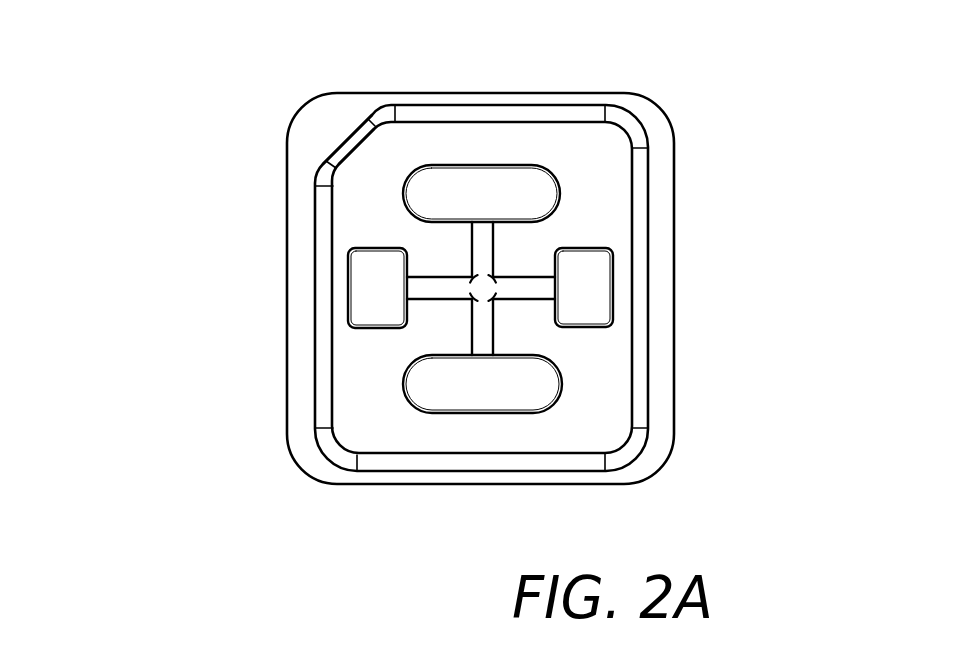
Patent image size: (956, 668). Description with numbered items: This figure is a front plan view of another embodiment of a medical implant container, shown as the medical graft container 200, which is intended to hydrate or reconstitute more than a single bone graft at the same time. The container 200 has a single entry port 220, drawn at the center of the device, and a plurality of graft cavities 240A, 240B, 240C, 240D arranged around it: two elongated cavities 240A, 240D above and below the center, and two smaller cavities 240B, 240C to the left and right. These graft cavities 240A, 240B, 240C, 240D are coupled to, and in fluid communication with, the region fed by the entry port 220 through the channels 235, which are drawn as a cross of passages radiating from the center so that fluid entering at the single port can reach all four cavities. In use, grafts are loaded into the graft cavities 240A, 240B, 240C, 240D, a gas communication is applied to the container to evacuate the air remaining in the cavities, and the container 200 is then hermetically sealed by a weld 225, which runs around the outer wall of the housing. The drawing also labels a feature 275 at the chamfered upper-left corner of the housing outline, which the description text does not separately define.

The medical graft container 200 is at (193, 120).
The weld 225 is at (640, 313).
The chamfered corner 275 is at (325, 125).
The graft cavity 240A is at (549, 189).
The graft cavity 240B is at (363, 312).
The graft cavity 240C is at (598, 273).
The graft cavity 240D is at (481, 398).
The channels 235 is at (472, 247).
The entry port 220 is at (483, 288).